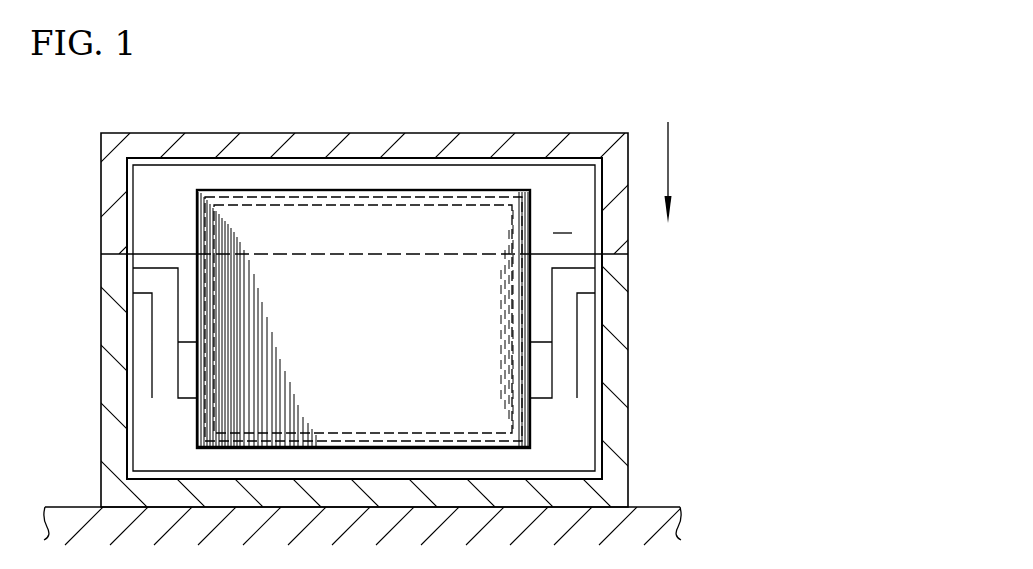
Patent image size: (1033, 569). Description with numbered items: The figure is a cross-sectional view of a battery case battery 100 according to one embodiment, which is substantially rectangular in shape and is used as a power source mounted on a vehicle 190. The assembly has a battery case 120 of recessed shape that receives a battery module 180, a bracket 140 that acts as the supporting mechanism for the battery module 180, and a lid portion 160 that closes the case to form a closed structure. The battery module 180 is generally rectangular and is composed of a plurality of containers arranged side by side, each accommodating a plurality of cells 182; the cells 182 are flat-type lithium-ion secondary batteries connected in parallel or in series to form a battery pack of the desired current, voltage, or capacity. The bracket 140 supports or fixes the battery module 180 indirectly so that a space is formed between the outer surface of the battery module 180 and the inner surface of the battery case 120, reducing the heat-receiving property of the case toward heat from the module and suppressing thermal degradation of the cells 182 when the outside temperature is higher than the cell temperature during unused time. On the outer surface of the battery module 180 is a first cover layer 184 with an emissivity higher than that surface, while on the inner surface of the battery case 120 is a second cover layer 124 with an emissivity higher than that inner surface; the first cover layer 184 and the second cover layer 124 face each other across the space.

The battery case battery 100 is at (324, 63).
The battery case 120 is at (610, 444).
The second cover layer 124 is at (422, 445).
The bracket 140 is at (150, 361).
The lid portion 160 is at (445, 133).
The battery module 180 is at (363, 268).
The cell 182 is at (347, 205).
The first cover layer 184 is at (268, 190).
The vehicle 190 is at (638, 503).